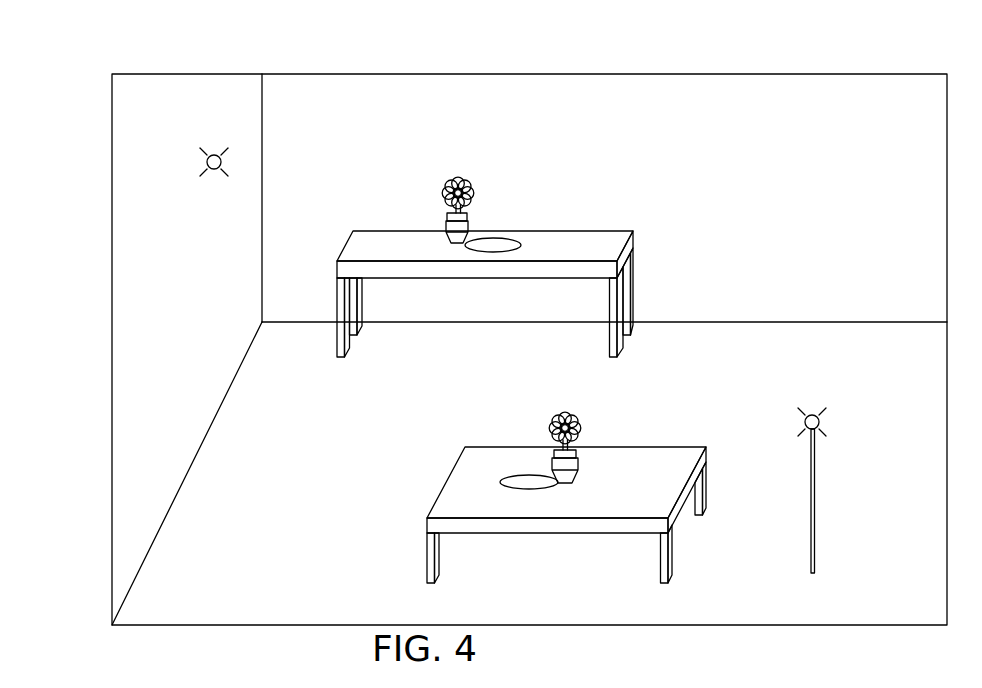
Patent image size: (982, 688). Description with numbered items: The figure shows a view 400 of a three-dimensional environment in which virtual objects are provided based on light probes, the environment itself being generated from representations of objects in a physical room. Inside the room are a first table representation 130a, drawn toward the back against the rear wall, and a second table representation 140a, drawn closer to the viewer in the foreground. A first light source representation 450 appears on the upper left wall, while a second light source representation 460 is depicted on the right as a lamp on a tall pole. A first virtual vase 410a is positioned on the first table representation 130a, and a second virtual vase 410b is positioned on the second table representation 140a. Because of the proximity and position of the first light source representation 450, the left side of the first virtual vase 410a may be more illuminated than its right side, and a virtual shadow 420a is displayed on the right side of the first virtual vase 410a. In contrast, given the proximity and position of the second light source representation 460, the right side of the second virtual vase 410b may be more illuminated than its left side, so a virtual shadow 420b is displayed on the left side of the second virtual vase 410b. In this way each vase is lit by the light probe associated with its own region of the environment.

The physical environment 400 is at (104, 40).
The first light source representation 450 is at (214, 154).
The second light source representation 460 is at (811, 413).
The first table representation 130a is at (636, 244).
The second table representation 140a is at (707, 495).
The first virtual vase 410a is at (458, 178).
The second virtual vase 410b is at (558, 414).
The virtual shadow 420a is at (508, 238).
The virtual shadow 420b is at (528, 476).